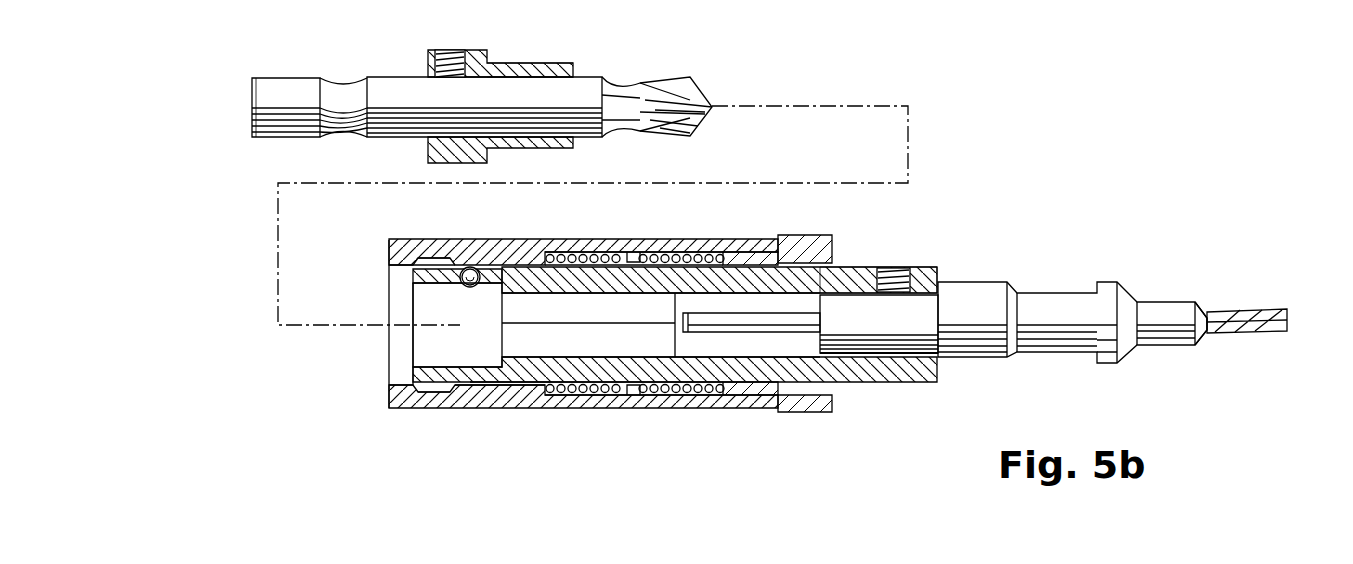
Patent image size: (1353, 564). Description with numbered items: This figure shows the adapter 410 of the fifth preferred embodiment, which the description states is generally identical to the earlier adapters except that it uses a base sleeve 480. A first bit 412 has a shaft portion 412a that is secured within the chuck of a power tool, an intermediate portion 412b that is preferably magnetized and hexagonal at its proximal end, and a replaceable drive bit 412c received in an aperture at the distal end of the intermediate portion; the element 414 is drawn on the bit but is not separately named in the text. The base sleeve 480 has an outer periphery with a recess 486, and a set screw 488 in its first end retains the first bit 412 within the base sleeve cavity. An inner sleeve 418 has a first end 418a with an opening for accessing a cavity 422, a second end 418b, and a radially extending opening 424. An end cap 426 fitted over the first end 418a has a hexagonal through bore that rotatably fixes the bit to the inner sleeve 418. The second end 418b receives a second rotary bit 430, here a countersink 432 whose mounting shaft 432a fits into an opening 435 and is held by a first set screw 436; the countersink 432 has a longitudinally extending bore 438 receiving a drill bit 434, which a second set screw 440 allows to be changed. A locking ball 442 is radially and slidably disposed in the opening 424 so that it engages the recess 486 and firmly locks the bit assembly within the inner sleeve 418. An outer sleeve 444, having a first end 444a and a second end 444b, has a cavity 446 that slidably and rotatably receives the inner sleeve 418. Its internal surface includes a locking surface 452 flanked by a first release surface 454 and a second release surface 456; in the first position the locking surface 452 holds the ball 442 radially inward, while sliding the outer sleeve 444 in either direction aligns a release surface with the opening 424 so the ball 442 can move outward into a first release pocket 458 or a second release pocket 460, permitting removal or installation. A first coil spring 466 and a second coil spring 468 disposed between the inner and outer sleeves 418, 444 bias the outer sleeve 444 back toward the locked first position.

The adapter 410 is at (978, 150).
The first bit 412 is at (376, 78).
The shaft portion 412a is at (262, 78).
The intermediate portion 412b is at (602, 77).
The replaceable drive bit 412c is at (672, 78).
The drill bit flute 414 is at (588, 137).
The inner sleeve 418 is at (668, 383).
The first end of inner sleeve 418a is at (413, 372).
The second end of inner sleeve 418b is at (843, 267).
The cavity 422 is at (547, 313).
The radially extending opening 424 is at (483, 268).
The end cap 426 is at (792, 238).
The second rotary bit 430 is at (1125, 292).
The countersink 432 is at (1207, 340).
The mounting shaft 432a is at (915, 357).
The drill bit 434 is at (1235, 308).
The opening 435 is at (862, 357).
The first set screw 436 is at (900, 272).
The longitudinally extending bore 438 is at (1208, 333).
The second set screw 440 is at (751, 322).
The locking ball 442 is at (468, 268).
The outer sleeve 444 is at (545, 398).
The first end of outer sleeve 444a is at (396, 373).
The second end of outer sleeve 444b is at (745, 397).
The cavity of outer sleeve 446 is at (525, 392).
The locking surface 452 is at (458, 373).
The first release surface 454 is at (470, 377).
The second release surface 456 is at (433, 262).
The first release pocket 458 is at (503, 373).
The second release pocket 460 is at (420, 262).
The first coil spring 466 is at (670, 257).
The second coil spring 468 is at (573, 247).
The base sleeve 480 is at (486, 52).
The recess 486 is at (540, 66).
The set screw 488 is at (445, 50).